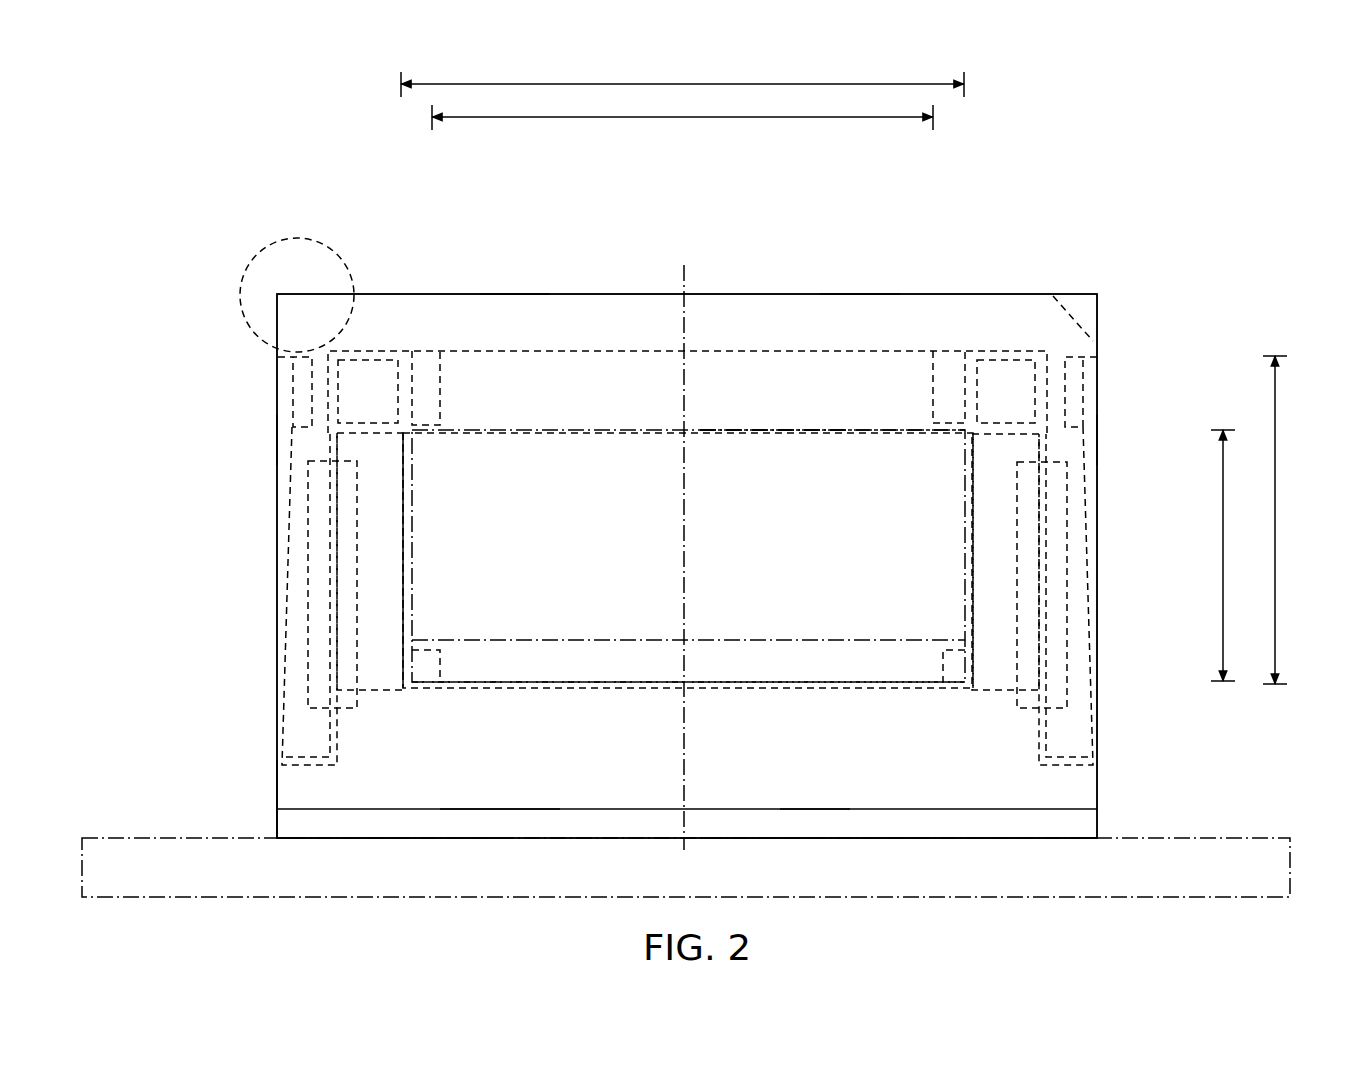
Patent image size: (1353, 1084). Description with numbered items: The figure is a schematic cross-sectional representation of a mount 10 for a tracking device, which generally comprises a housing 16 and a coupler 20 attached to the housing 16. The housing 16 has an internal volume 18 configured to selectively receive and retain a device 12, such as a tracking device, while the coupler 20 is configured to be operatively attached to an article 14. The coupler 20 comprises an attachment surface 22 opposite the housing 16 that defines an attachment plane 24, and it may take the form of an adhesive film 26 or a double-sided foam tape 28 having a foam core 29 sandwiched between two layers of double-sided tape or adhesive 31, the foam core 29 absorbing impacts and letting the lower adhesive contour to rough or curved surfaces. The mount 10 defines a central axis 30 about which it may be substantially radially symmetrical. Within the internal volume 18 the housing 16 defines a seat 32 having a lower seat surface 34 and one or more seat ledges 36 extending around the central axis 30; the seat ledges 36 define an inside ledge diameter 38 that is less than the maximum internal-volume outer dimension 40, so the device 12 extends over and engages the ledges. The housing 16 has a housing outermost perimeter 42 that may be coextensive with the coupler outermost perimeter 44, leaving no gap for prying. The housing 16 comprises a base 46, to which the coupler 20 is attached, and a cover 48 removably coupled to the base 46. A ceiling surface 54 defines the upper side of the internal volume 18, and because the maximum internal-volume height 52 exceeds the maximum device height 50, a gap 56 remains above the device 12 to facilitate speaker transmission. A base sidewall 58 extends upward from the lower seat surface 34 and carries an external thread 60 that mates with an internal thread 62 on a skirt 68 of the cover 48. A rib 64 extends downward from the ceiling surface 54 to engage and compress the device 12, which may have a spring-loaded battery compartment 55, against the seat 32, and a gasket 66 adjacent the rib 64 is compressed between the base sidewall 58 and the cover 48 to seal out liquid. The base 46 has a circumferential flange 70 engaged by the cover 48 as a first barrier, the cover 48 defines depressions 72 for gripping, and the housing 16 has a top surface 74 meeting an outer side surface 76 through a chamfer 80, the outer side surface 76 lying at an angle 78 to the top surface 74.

The mount 10 is at (1121, 134).
The device 12 is at (815, 432).
The article 14 is at (1240, 838).
The housing 16 is at (1135, 371).
The internal volume 18 is at (731, 384).
The coupler 20 is at (450, 807).
The attachment surface 22 is at (983, 840).
The attachment plane 24 is at (903, 842).
The adhesive film 26 is at (1063, 840).
The double-sided foam tape 28 is at (400, 840).
The foam core 29 is at (727, 827).
The central axis 30 is at (684, 278).
The double-sided tape or adhesive 31 is at (822, 808).
The seat 32 is at (875, 681).
The lower seat surface 34 is at (785, 680).
The seat ledge 36 is at (422, 648).
The inside ledge diameter 38 is at (685, 118).
The maximum internal-volume outer dimension 40 is at (685, 82).
The housing outermost perimeter 42 is at (277, 785).
The coupler outermost perimeter 44 is at (277, 825).
The base 46 is at (497, 813).
The cover 48 is at (858, 292).
The maximum device height 50 is at (1222, 520).
The maximum internal-volume height 52 is at (1276, 522).
The ceiling surface 54 is at (538, 352).
The spring-loaded battery compartment 55 is at (610, 637).
The gap 56 is at (760, 402).
The base sidewall 58 is at (410, 545).
The external thread 60 is at (318, 590).
The internal thread 62 is at (348, 520).
The rib 64 is at (443, 382).
The gasket 66 is at (293, 350).
The skirt 68 is at (279, 438).
The circumferential flange 70 is at (1068, 757).
The depressions 72 is at (280, 373).
The top surface 74 is at (513, 293).
The outer side surface 76 is at (302, 518).
The angle 78 is at (272, 243).
The chamfer 80 is at (1081, 357).